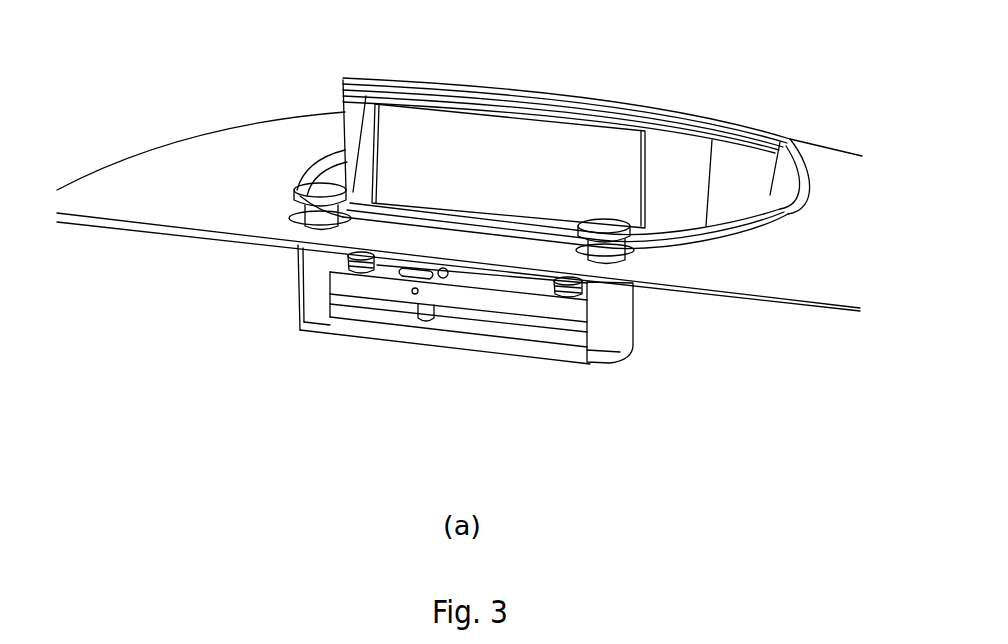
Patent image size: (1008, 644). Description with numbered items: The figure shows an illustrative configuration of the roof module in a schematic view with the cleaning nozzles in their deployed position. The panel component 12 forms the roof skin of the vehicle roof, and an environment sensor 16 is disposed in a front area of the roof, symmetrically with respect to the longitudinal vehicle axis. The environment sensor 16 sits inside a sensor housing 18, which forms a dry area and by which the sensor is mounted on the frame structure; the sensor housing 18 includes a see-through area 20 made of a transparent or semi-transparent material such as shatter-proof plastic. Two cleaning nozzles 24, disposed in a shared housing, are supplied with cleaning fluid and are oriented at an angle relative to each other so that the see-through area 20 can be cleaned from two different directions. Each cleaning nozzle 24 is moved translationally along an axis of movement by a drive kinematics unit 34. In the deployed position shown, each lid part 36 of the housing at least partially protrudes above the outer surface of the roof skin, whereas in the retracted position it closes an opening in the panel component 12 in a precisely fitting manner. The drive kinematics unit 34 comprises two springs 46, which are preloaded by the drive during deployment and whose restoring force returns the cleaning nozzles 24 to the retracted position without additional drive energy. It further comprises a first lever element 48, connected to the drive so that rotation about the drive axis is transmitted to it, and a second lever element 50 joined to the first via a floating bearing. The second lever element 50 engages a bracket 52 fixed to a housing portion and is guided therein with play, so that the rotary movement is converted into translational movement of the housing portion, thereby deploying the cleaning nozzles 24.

The panel component 12 is at (157, 197).
The environment sensor 16 is at (578, 173).
The sensor housing 18 is at (355, 148).
The see-through area 20 is at (440, 170).
The cleaning nozzle 24 is at (320, 222).
The drive kinematics unit 34 is at (315, 307).
The lid part 36 is at (317, 193).
The spring 46 is at (363, 262).
The first lever element 48 is at (418, 313).
The second lever element 50 is at (495, 278).
The bracket 52 is at (442, 272).